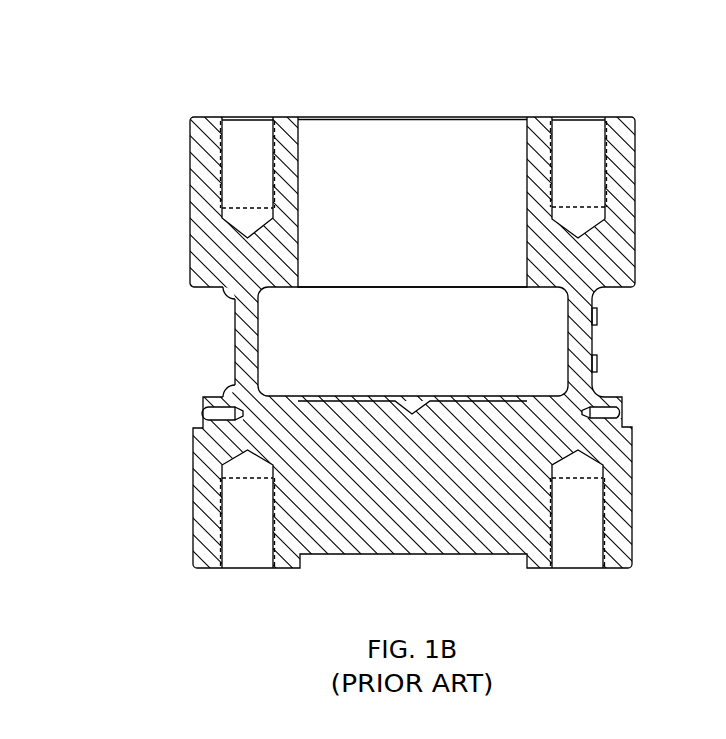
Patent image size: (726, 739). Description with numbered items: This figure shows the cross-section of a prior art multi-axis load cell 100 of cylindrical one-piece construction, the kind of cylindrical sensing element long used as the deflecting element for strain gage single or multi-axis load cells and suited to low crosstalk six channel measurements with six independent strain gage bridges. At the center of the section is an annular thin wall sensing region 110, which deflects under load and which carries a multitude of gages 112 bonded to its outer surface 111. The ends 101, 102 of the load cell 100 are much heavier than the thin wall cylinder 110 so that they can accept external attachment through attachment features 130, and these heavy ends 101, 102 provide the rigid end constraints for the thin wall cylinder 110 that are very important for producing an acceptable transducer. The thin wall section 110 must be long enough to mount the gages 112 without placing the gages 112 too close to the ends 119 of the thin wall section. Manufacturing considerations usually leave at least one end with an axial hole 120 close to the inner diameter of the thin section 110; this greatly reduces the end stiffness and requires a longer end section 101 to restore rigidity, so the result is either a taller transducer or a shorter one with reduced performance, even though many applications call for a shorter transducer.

The multi-axis load cell 100 is at (165, 80).
The end section 101 is at (356, 202).
The end 102 is at (160, 519).
The annular thin wall sensing region 110 is at (240, 344).
The outer surface 111 is at (594, 340).
The gages 112 is at (598, 318).
The ends of the thin wall section 119 is at (227, 293).
The axial hole 120 is at (430, 215).
The attachment features 130 is at (250, 135).